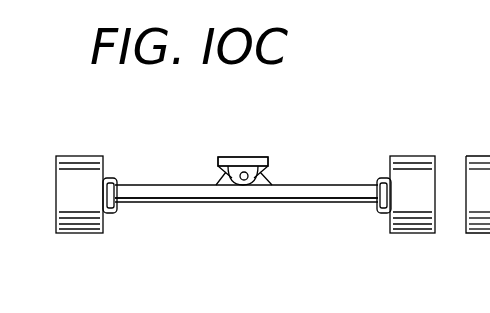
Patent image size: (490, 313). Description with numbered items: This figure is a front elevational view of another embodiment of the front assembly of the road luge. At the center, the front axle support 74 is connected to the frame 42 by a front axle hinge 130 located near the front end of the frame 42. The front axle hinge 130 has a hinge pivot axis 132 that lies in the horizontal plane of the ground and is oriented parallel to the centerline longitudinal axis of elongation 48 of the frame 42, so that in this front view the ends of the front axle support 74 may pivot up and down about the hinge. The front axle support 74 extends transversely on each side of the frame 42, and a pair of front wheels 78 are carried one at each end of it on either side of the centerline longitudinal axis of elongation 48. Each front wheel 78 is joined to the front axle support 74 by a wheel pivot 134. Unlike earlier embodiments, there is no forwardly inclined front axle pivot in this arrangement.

The frame 42 is at (260, 157).
The centerline longitudinal axis of elongation 48 is at (247, 210).
The front axle support 74 is at (161, 205).
The front wheels 78 is at (72, 163).
The front axle hinge 130 is at (266, 182).
The hinge pivot axis 132 is at (220, 176).
The wheel pivots 134 is at (138, 158).